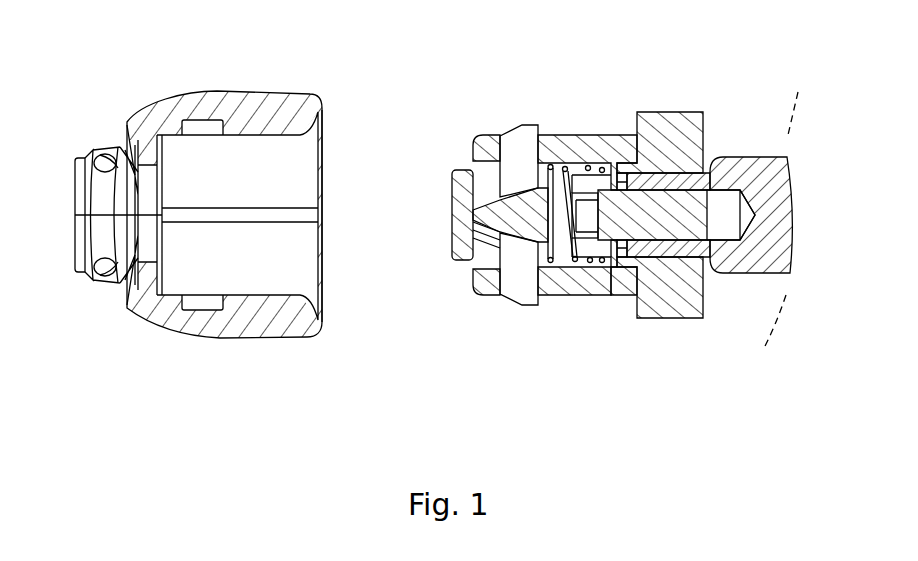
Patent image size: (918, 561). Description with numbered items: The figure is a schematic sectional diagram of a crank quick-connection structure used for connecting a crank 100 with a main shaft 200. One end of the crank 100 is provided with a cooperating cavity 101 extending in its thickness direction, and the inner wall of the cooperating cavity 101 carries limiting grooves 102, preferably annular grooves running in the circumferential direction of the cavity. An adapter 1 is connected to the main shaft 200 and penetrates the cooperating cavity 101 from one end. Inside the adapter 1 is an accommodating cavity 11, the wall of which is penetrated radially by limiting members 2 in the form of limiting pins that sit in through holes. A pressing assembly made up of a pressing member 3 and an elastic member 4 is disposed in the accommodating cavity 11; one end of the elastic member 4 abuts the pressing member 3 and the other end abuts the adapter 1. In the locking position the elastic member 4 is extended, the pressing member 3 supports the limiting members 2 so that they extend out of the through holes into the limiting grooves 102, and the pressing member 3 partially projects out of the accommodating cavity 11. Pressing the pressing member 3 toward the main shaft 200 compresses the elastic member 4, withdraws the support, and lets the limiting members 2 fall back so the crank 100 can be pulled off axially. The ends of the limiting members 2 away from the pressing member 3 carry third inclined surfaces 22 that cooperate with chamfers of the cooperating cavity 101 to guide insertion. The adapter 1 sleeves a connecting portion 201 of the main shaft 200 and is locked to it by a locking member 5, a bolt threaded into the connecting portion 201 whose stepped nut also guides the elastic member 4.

The adapter 1 is at (657, 145).
The limiting members 2 is at (520, 150).
The pressing member 3 is at (467, 255).
The elastic member 4 is at (578, 140).
The locking member 5 is at (683, 278).
The accommodating cavity 11 is at (565, 282).
The third inclined surfaces 22 is at (520, 285).
The crank 100 is at (247, 98).
The cooperating cavity 101 is at (275, 160).
The limiting grooves 102 is at (203, 303).
The main shaft 200 is at (735, 170).
The connecting portion 201 is at (668, 250).